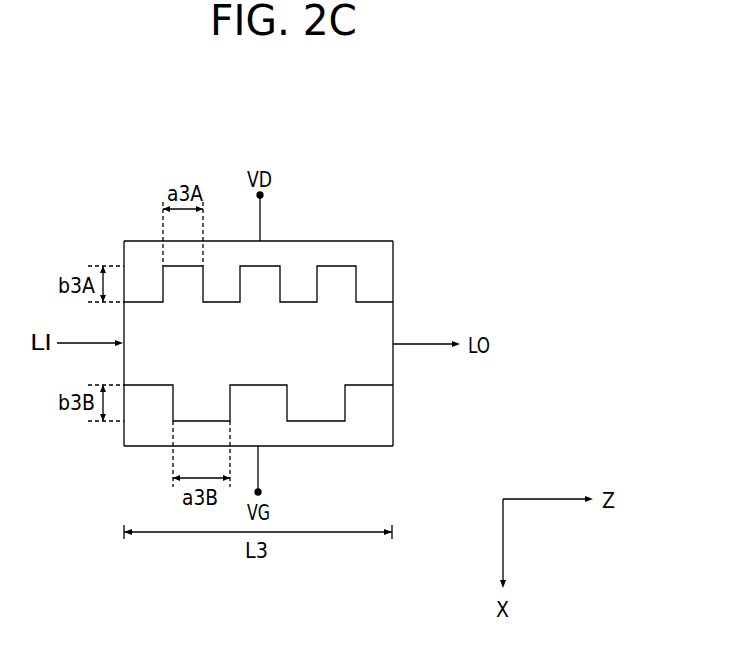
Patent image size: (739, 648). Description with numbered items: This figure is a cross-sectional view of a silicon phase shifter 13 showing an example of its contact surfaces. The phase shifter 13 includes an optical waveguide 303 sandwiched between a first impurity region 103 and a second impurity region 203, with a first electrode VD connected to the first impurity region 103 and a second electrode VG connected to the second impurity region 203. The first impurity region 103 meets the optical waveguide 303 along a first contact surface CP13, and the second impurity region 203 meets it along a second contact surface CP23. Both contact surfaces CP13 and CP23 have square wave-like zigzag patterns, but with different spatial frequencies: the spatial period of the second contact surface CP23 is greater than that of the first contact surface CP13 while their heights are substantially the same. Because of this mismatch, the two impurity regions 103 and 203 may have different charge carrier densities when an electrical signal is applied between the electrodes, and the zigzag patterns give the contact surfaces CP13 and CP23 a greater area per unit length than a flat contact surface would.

The silicon phase shifter 13 is at (274, 115).
The first impurity region 103 is at (293, 250).
The first contact surface CP13 is at (358, 285).
The optical waveguide 303 is at (382, 323).
The second contact surface CP23 is at (373, 388).
The second impurity region 203 is at (292, 420).